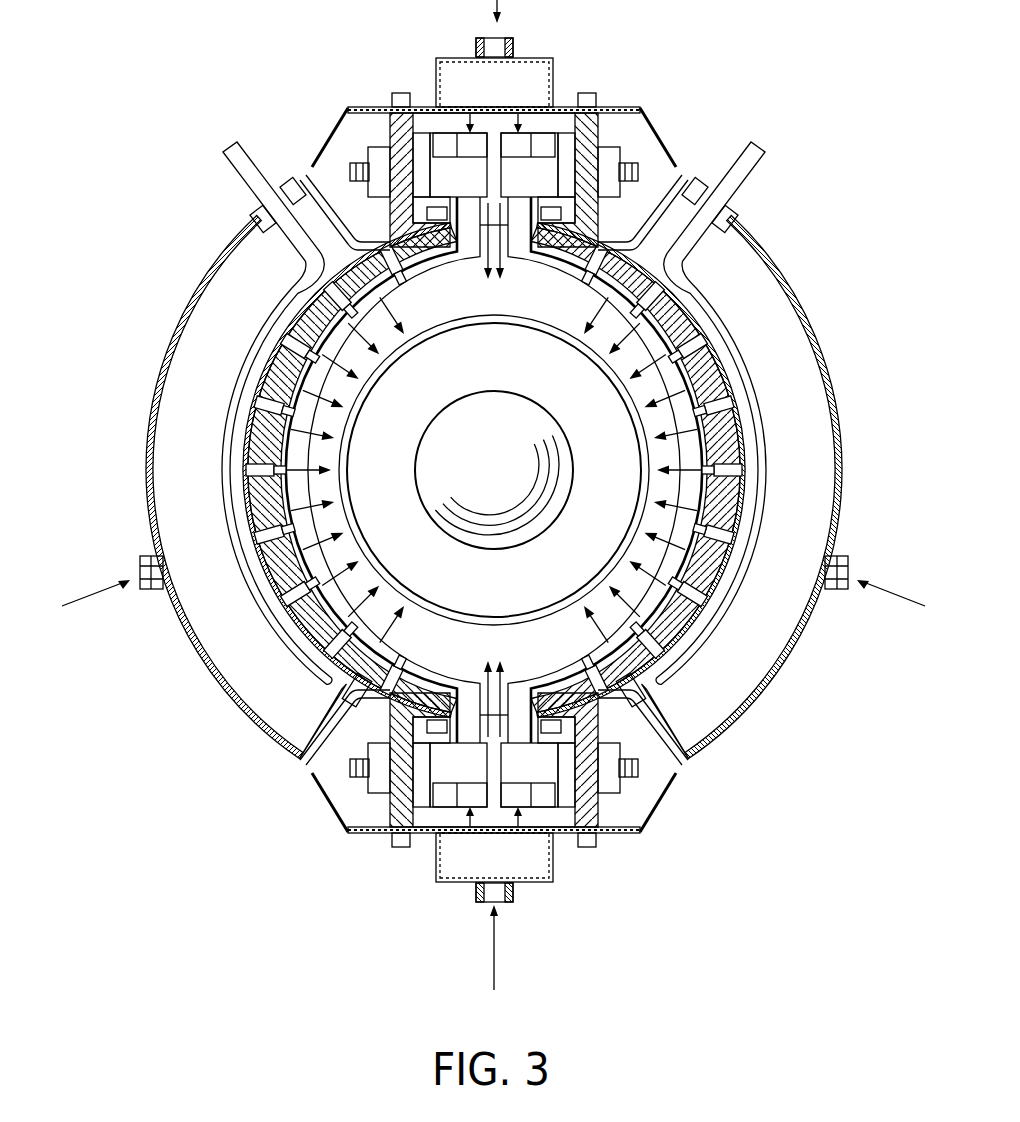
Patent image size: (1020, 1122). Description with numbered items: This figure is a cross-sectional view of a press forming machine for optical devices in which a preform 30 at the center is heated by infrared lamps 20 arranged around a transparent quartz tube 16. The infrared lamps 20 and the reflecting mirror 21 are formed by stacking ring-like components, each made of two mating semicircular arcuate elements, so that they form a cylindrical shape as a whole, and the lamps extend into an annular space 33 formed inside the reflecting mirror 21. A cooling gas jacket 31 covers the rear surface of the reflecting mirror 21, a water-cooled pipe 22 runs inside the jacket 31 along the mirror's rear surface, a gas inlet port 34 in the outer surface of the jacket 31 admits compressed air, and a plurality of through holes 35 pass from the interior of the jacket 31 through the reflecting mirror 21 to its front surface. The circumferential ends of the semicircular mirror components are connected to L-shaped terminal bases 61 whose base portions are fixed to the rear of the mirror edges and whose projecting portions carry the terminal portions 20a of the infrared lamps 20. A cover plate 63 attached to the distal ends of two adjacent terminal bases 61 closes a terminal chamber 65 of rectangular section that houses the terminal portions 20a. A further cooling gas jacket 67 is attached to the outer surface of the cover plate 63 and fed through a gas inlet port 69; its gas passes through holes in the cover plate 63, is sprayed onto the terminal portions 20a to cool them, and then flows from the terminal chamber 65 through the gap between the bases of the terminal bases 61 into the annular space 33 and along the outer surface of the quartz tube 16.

The transparent quartz tube 16 is at (387, 559).
The infrared lamps 20 is at (427, 637).
The terminal portions 20a is at (460, 788).
The reflecting mirror 21 is at (678, 383).
The water-cooled pipe 22 is at (757, 403).
The preform 30 is at (545, 533).
The cooling gas jacket 31 is at (813, 333).
The annular space 33 is at (650, 422).
The gas inlet port 34 is at (833, 598).
The through holes 35 is at (742, 468).
The terminal bases 61 is at (600, 807).
The cover plate 63 is at (623, 834).
The terminal chamber 65 is at (490, 810).
The cooling gas jacket 67 is at (537, 866).
The gas inlet port 69 is at (472, 892).